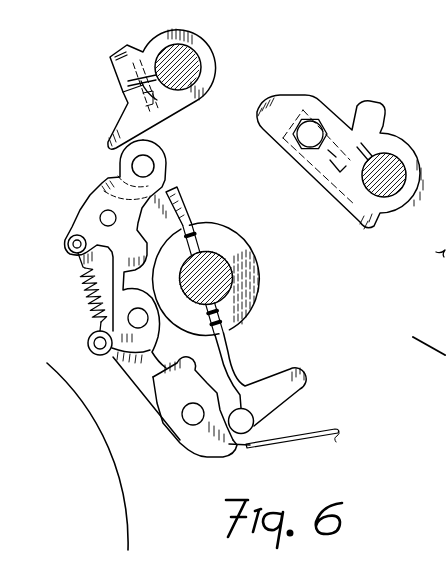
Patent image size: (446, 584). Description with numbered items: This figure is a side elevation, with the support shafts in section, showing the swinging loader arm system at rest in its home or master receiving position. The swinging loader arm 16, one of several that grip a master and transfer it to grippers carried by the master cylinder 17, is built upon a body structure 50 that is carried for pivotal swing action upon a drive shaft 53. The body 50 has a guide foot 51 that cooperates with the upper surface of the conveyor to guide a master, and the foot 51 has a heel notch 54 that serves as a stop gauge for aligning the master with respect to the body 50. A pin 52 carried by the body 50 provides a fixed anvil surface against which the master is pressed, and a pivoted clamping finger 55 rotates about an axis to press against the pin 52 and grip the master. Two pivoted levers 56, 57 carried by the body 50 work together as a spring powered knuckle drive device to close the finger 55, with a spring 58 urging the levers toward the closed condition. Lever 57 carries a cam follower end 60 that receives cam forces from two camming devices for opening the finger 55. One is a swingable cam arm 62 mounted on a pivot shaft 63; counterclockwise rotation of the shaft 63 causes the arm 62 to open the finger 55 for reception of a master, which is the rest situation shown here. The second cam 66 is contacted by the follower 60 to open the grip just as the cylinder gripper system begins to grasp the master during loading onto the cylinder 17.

The swinging loader arm 16 is at (255, 350).
The master cylinder 17 is at (130, 521).
The body structure 50 is at (176, 219).
The guide foot 51 is at (298, 370).
The pin 52 is at (256, 424).
The drive shaft 53 is at (222, 262).
The heel notch 54 is at (252, 444).
The clamping finger 55 is at (163, 418).
The pivoted lever 56 is at (137, 373).
The pivoted lever 57 is at (113, 180).
The spring 58 is at (80, 298).
The cam follower end 60 is at (150, 142).
The swingable cam arm 62 is at (215, 44).
The pivot shaft 63 is at (174, 28).
The second cam 66 is at (318, 100).